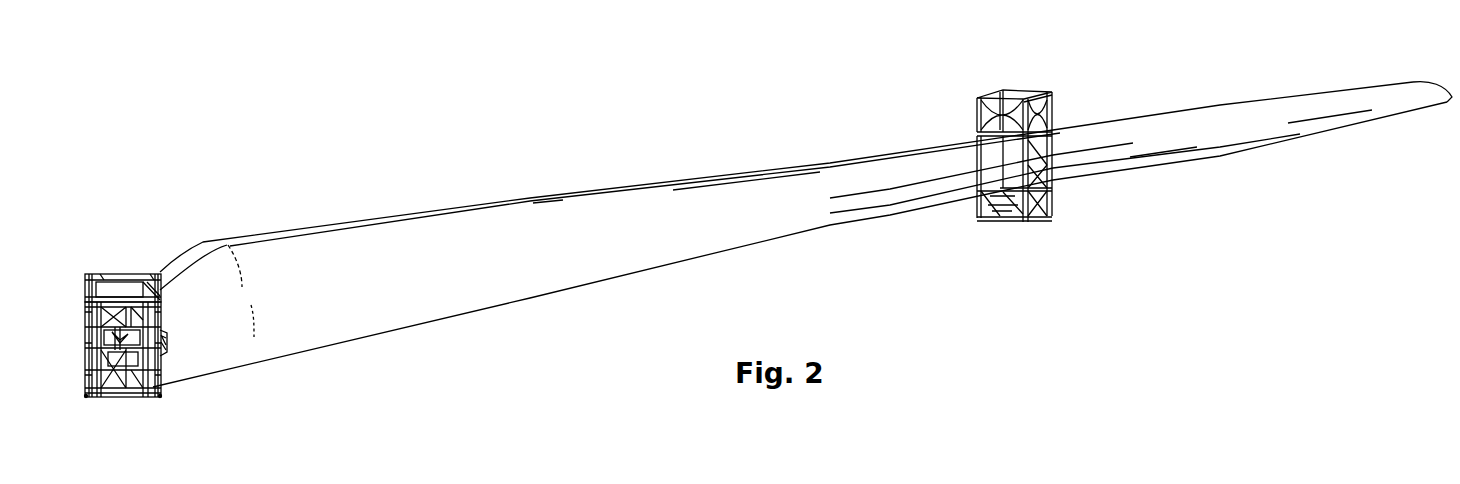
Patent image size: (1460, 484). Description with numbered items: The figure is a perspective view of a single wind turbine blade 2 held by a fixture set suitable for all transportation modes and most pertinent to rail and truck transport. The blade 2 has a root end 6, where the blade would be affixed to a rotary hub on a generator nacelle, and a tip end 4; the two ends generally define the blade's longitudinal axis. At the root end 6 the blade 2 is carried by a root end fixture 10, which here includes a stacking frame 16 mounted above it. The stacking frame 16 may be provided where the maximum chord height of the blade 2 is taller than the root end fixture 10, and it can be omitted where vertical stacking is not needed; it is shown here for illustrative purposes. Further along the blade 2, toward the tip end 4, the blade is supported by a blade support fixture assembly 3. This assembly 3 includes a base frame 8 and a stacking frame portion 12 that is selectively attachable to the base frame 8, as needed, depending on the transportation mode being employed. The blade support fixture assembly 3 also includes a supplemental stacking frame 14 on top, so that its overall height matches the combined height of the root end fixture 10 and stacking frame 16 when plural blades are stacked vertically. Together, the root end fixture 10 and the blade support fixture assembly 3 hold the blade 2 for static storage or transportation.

The wind turbine blade 2 is at (817, 165).
The blade support fixture assembly 3 is at (961, 232).
The tip end 4 is at (1439, 92).
The root end 6 is at (160, 323).
The base frame 8 is at (1052, 203).
The root end fixture 10 is at (160, 392).
The stacking frame portion 12 is at (1053, 150).
The supplemental stacking frame 14 is at (977, 110).
The stacking frame 16 is at (124, 272).